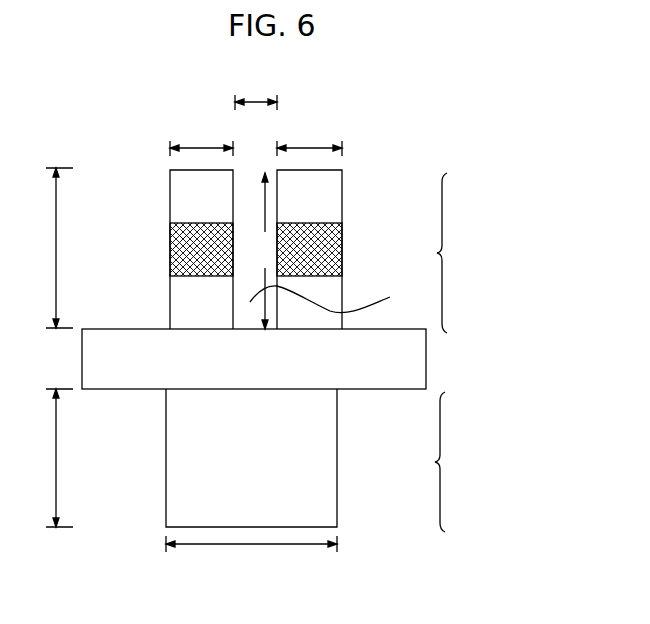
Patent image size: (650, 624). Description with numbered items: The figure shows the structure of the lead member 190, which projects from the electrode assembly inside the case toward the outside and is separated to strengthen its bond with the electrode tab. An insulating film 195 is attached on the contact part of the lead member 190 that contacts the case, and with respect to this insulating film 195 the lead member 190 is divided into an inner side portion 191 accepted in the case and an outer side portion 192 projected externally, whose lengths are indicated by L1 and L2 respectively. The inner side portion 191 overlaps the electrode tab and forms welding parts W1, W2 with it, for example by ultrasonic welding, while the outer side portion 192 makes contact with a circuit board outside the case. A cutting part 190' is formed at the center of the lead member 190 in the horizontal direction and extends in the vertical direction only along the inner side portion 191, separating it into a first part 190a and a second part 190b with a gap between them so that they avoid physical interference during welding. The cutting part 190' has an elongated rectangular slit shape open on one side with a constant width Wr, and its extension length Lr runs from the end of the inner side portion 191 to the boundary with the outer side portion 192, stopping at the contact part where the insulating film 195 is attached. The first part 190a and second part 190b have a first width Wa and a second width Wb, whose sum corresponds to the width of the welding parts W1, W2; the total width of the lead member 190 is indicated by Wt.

The lead member 190 is at (282, 458).
The first part 190a is at (170, 197).
The second part 190b is at (322, 195).
The cutting part 190' is at (343, 299).
The inner side portion 191 is at (468, 253).
The outer side portion 192 is at (465, 462).
The insulating film 195 is at (415, 360).
The welding part W1 is at (172, 247).
The welding part W2 is at (335, 250).
The first width Wa is at (201, 138).
The second width Wb is at (309, 138).
The width of the cutting part Wr is at (256, 92).
The total width of pillar Wt is at (251, 558).
The length of the inner side portion L1 is at (49, 248).
The length of the outer side portion L2 is at (49, 458).
The extension length of the cutting part Lr is at (258, 251).